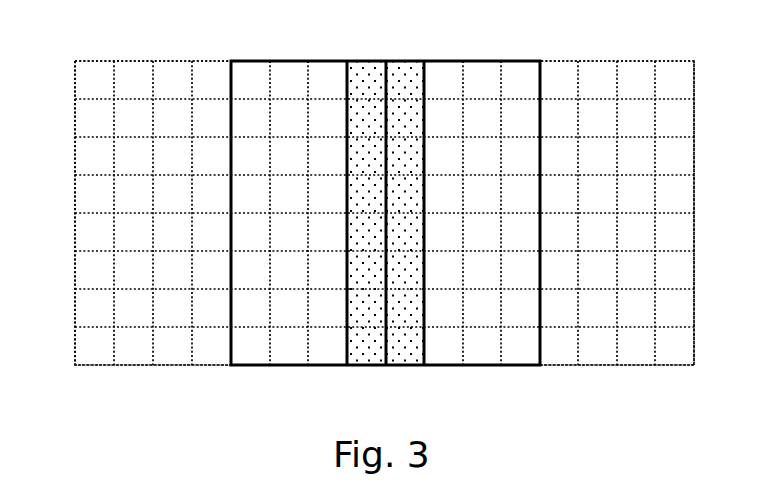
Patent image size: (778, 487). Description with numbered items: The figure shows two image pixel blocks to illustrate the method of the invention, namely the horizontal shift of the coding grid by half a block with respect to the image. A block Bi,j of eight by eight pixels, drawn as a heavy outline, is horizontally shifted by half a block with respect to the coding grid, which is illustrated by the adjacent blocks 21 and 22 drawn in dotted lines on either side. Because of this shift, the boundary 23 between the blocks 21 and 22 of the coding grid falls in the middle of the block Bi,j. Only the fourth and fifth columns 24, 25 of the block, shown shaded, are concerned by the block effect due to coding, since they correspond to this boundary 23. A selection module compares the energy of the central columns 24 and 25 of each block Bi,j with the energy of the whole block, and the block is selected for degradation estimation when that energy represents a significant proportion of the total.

The adjacent block 21 is at (75, 366).
The adjacent block 22 is at (694, 366).
The boundary 23 is at (385, 350).
The fourth column 24 is at (362, 66).
The fifth column 25 is at (405, 66).
The block Bi,j is at (233, 367).